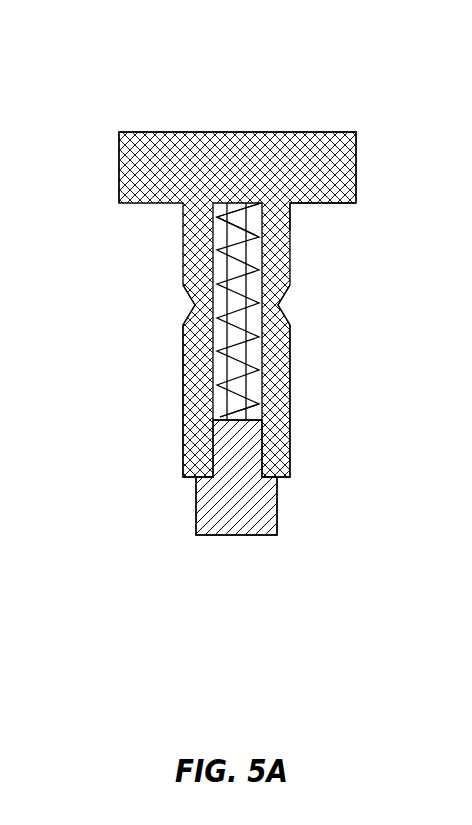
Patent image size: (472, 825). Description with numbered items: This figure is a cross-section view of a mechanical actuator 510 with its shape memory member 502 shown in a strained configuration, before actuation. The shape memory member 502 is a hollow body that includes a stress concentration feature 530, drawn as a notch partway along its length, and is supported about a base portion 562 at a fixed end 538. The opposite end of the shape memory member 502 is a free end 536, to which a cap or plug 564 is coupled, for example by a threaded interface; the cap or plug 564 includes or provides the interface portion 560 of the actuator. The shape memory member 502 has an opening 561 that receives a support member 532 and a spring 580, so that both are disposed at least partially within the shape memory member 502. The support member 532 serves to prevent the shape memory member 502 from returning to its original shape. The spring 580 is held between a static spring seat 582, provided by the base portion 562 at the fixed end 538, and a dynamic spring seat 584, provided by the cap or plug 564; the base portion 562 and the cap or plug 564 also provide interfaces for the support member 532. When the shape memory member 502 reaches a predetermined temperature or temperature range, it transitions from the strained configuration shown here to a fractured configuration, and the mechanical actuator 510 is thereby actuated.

The mechanical actuator 510 is at (112, 52).
The shape memory member 502 is at (292, 279).
The base portion 562 is at (340, 204).
The fixed end 538 is at (307, 218).
The stress concentration feature 530 is at (295, 305).
The free end 536 is at (317, 462).
The cap or plug 564 is at (277, 500).
The support member 532 is at (250, 347).
The spring 580 is at (220, 355).
The static spring seat 582 is at (220, 205).
The opening 561 is at (222, 413).
The dynamic spring seat 584 is at (258, 415).
The interface portion 560 is at (289, 600).